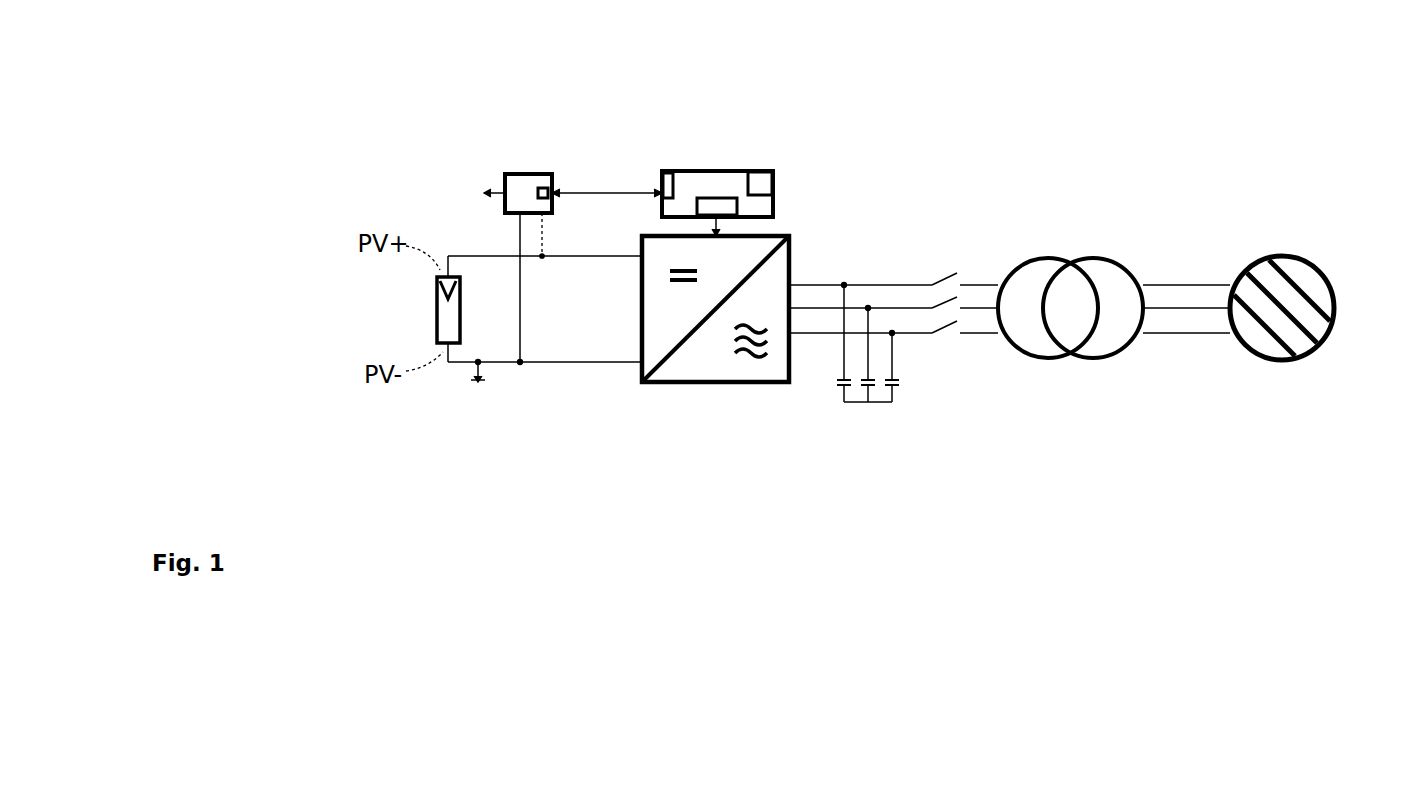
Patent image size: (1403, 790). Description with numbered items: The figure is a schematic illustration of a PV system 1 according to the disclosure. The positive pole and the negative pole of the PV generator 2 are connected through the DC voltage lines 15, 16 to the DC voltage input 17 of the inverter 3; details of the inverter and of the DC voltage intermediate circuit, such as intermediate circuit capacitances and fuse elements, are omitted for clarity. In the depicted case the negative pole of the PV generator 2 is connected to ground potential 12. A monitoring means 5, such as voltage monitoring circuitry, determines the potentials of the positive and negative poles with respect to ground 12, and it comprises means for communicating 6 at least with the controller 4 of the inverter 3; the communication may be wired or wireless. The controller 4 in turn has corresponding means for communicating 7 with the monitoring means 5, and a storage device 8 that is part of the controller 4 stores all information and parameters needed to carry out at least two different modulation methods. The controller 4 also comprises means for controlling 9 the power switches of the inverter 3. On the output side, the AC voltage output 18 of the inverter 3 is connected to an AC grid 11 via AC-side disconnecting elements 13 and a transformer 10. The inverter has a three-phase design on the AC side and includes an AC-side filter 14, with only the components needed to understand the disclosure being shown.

The PV system 1 is at (885, 215).
The PV generator 2 is at (435, 306).
The inverter 3 is at (690, 385).
The controller 4 is at (734, 144).
The monitoring means 5 is at (542, 226).
The means for communicating 6 is at (546, 175).
The means for communicating 7 is at (670, 186).
The storage device 8 is at (773, 178).
The means for controlling 9 is at (728, 228).
The transformer 10 is at (1085, 367).
The AC grid 11 is at (1275, 250).
The ground potential 12 is at (484, 193).
The AC-side disconnecting elements 13 is at (945, 277).
The AC-side filter 14 is at (902, 392).
The DC voltage line 15 is at (470, 254).
The DC voltage line 16 is at (548, 365).
The DC voltage input 17 is at (610, 312).
The AC voltage output 18 is at (792, 315).